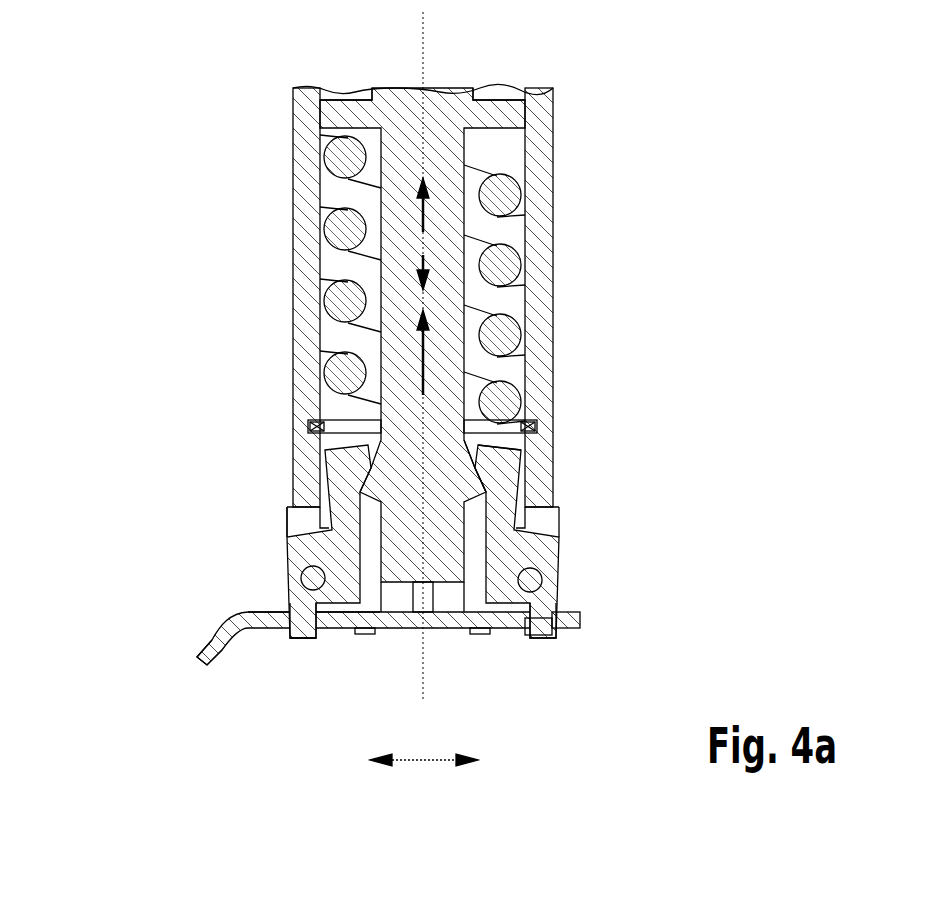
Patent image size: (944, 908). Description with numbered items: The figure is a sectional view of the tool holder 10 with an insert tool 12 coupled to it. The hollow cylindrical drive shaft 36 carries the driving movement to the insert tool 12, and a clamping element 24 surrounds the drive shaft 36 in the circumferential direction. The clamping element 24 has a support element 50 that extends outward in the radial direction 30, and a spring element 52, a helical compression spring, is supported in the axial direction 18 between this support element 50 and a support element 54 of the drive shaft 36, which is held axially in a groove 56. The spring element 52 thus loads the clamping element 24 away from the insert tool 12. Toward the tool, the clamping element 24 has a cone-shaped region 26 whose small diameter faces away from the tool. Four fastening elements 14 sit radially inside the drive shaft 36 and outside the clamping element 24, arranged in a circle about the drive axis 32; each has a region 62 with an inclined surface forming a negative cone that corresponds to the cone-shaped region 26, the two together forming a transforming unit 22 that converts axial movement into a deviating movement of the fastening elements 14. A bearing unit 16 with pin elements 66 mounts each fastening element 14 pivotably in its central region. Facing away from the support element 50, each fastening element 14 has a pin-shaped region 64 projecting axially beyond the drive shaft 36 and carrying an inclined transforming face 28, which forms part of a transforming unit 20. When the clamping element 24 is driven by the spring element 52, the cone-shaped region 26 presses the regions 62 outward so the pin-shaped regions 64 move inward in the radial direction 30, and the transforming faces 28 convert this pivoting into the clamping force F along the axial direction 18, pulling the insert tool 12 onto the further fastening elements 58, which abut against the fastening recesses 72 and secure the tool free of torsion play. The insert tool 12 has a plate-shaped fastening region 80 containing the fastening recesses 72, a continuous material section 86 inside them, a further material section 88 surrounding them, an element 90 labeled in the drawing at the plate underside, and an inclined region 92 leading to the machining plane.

The tool holder 10 is at (260, 535).
The insert tool 12 is at (185, 631).
The fastening element 14 is at (469, 541).
The bearing unit 16 is at (566, 575).
The axial direction 18 is at (430, 223).
The transforming unit 20 is at (578, 628).
The transforming unit 22 is at (488, 468).
The clamping element 24 is at (448, 100).
The cone-shaped region 26 is at (470, 458).
The transforming face 28 is at (375, 648).
The radial direction 30 is at (423, 768).
The drive axis 32 is at (354, 357).
The drive shaft 36 is at (538, 130).
The support element 50 is at (502, 112).
The spring element 52 is at (500, 268).
The support element 54 is at (361, 415).
The groove 56 is at (312, 426).
The further fastening element 58 is at (326, 638).
The region 62 is at (500, 487).
The pin-shaped region 64 is at (421, 671).
The pin element 66 is at (541, 585).
The fastening recess 72 is at (284, 688).
The fastening region 80 is at (282, 612).
The material section 86 is at (478, 683).
The further material section 88 is at (548, 620).
The locating projection 90 is at (486, 634).
The region 92 is at (208, 648).
The clamping force F is at (427, 352).